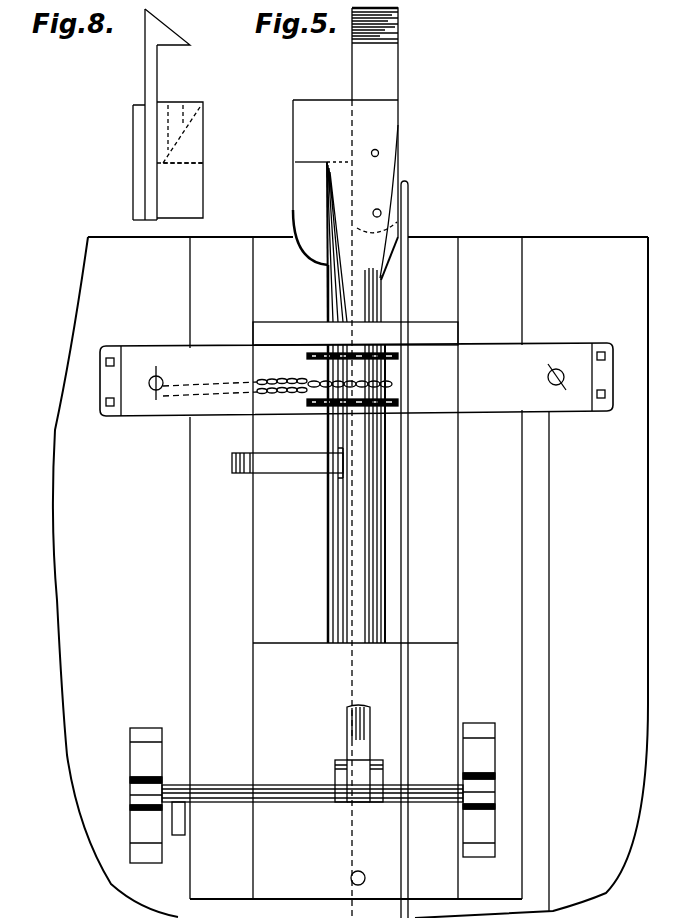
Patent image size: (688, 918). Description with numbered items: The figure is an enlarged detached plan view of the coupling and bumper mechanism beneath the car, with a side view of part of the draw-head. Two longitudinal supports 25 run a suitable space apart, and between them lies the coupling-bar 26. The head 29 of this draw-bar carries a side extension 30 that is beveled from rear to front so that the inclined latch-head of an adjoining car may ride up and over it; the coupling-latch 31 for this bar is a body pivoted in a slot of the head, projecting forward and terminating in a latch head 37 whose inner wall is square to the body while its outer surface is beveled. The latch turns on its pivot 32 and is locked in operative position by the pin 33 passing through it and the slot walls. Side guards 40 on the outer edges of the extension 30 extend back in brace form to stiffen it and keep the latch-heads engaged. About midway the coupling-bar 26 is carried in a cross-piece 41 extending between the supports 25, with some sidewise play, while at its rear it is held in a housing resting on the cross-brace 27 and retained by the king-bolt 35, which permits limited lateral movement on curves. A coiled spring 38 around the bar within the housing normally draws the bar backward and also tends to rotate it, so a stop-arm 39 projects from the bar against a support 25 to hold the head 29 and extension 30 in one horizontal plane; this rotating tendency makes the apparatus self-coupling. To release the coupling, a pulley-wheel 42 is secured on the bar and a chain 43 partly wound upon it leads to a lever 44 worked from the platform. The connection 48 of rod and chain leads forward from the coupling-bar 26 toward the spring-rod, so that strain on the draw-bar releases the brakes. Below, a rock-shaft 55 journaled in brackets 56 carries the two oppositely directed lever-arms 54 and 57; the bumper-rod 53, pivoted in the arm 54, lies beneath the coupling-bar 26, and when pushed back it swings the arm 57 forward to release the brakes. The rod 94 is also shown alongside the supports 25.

In FIG. 5, the supports 25 is at (350, 577).
In FIG. 5, the coupling-bar 26 is at (385, 490).
In FIG. 5, the cross-brace 27 is at (351, 683).
In FIG. 5, the head 29 is at (370, 228).
In FIG. 8, the side extension 30 is at (180, 160).
In FIG. 5, the side extension 30 is at (345, 190).
In FIG. 8, the coupling-latch 31 is at (163, 114).
In FIG. 5, the coupling-latch 31 is at (375, 54).
In FIG. 8, the pivot 32 is at (133, 211).
In FIG. 5, the pivot 32 is at (377, 215).
In FIG. 8, the pin 33 is at (133, 155).
In FIG. 5, the pin 33 is at (372, 161).
In FIG. 5, the king-bolt 35 is at (362, 872).
In FIG. 8, the latch head 37 is at (167, 27).
In FIG. 5, the latch head 37 is at (395, 33).
In FIG. 5, the spring 38 is at (352, 102).
In FIG. 5, the stop-arm 39 is at (287, 463).
In FIG. 8, the side guards 40 is at (180, 183).
In FIG. 5, the side guards 40 is at (312, 194).
In FIG. 5, the cross-piece 41 is at (355, 333).
In FIG. 5, the pulley-wheel 42 is at (305, 356).
In FIG. 5, the chain 43 is at (310, 383).
In FIG. 5, the lever 44 is at (356, 379).
In FIG. 5, the connection 48 is at (409, 580).
In FIG. 5, the bumper-rod 53 is at (372, 724).
In FIG. 5, the lever-arm 54 is at (380, 762).
In FIG. 5, the rock-shaft 55 is at (296, 786).
In FIG. 5, the brackets 56 is at (312, 793).
In FIG. 5, the lever-arm 57 is at (178, 836).
In FIG. 5, the rod 94 is at (549, 498).